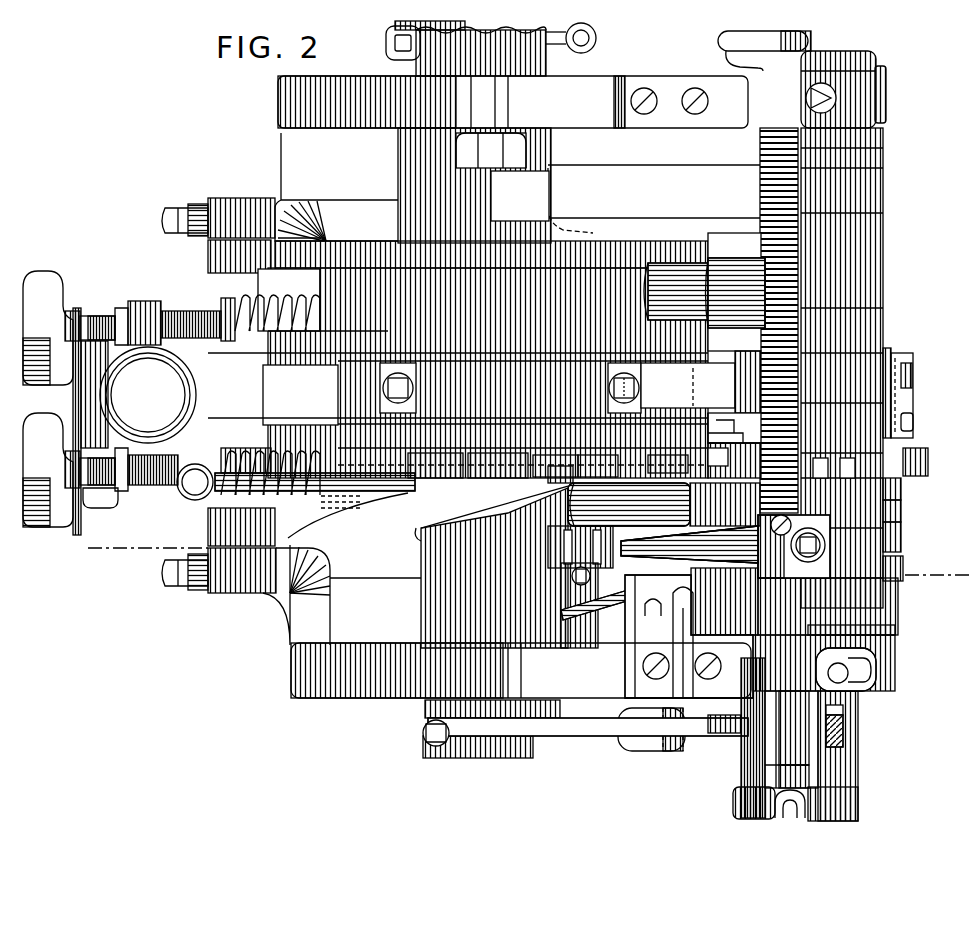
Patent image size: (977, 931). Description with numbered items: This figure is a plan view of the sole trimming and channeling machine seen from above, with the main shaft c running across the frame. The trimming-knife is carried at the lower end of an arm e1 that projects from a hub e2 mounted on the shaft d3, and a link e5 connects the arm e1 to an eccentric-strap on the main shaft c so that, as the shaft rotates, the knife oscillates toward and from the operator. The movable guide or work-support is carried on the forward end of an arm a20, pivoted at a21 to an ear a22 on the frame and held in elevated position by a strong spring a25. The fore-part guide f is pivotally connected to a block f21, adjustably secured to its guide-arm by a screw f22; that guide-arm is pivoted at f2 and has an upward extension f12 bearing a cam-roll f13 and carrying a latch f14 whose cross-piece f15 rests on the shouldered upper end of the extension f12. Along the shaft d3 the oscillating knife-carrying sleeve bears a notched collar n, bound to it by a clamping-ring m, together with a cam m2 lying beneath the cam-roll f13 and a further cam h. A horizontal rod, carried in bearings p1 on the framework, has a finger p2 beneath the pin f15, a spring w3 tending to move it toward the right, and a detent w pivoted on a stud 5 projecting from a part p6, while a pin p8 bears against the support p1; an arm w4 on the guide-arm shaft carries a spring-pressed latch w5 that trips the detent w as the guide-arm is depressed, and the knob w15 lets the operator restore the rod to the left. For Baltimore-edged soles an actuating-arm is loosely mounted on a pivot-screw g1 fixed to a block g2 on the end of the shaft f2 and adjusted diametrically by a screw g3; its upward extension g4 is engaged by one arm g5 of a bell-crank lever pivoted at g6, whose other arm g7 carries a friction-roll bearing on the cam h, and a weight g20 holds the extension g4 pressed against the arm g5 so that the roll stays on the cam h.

The main shaft c is at (586, 713).
The bearing p1 is at (748, 90).
The knob w15 is at (724, 32).
The shaft d3 is at (830, 45).
The spring w3 is at (752, 195).
The fore-part guide f is at (880, 345).
The block f21 is at (900, 358).
The hub e2 is at (900, 420).
The screw f22 is at (912, 452).
The clamping-ring m is at (893, 470).
The notched collar n is at (893, 500).
The cam m2 is at (893, 530).
The cam h is at (890, 572).
The stud 5 is at (824, 625).
The ear a22 is at (215, 192).
The pivot a21 is at (235, 190).
The arm a20 is at (312, 302).
The link e5 is at (557, 388).
The arm e1 is at (734, 428).
The block g2 is at (440, 448).
The pivot-screw g1 is at (475, 448).
The upward extension g4 is at (535, 448).
The bell-crank lever arm g5 is at (580, 448).
The cross-piece f15 is at (580, 470).
The upward extension f12 is at (620, 478).
The pivot g6 is at (648, 458).
The adjusting-screw g3 is at (400, 485).
The spring a25 is at (348, 516).
The latch f14 is at (491, 567).
The cam-roll f13 is at (689, 542).
The finger p2 is at (593, 577).
The bell-crank lever arm g7 is at (684, 630).
The arm w4 is at (568, 722).
The pivot shaft f2 is at (488, 752).
The spring-pressed latch w5 is at (710, 712).
The pin p8 is at (745, 732).
The detent w is at (762, 740).
The arm p6 is at (852, 734).
The weight g20 is at (178, 485).